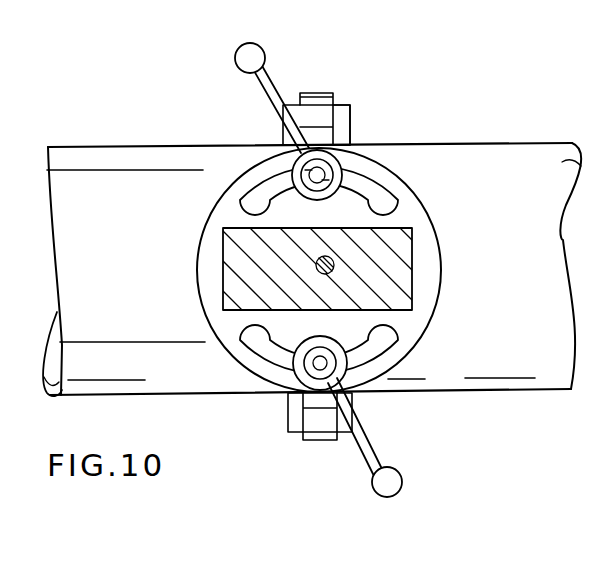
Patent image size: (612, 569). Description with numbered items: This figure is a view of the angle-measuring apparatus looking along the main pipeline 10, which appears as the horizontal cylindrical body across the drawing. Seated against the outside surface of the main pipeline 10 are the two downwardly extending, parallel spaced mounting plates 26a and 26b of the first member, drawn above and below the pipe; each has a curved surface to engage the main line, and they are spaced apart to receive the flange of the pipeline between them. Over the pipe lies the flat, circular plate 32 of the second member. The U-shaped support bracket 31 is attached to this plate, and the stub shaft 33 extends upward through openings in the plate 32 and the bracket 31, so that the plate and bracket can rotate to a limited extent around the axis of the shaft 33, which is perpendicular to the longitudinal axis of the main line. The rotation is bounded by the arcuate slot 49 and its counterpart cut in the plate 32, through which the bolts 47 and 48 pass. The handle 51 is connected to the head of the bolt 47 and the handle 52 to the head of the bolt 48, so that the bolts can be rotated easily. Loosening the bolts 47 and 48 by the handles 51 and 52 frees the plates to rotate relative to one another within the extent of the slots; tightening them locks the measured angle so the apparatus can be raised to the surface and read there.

The main pipeline 10 is at (530, 139).
The mounting plate 26a is at (289, 104).
The mounting plate 26b is at (350, 107).
The U-shaped support bracket 31 is at (412, 298).
The circular plate 32 is at (417, 209).
The stub shaft 33 is at (330, 266).
The bolt 47 is at (323, 364).
The bolt 48 is at (322, 172).
The arcuate slot 49 is at (268, 353).
The handle 51 is at (375, 494).
The handle 52 is at (262, 46).